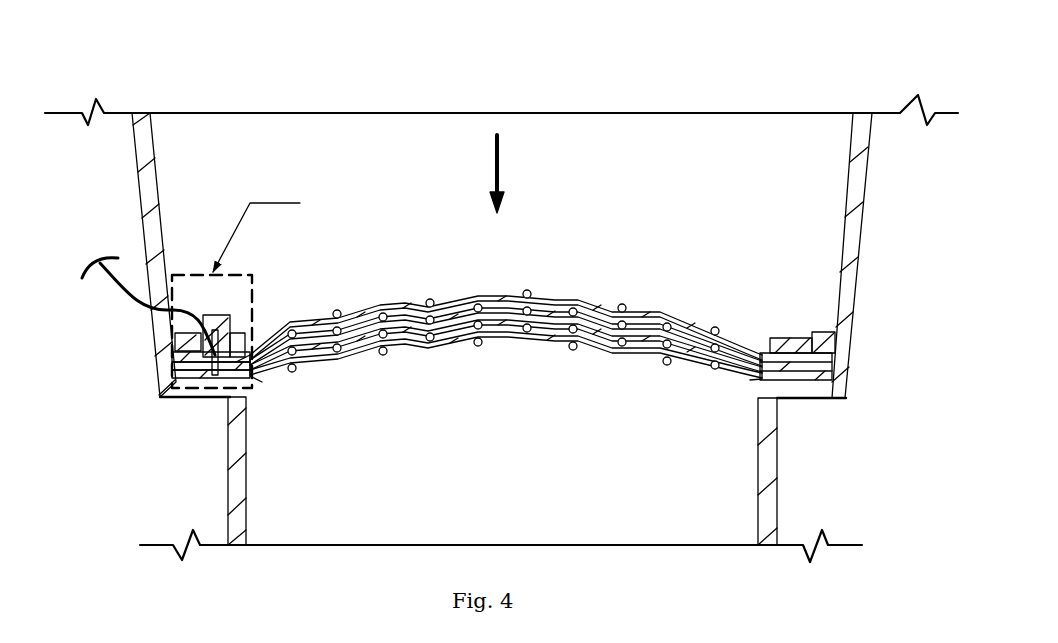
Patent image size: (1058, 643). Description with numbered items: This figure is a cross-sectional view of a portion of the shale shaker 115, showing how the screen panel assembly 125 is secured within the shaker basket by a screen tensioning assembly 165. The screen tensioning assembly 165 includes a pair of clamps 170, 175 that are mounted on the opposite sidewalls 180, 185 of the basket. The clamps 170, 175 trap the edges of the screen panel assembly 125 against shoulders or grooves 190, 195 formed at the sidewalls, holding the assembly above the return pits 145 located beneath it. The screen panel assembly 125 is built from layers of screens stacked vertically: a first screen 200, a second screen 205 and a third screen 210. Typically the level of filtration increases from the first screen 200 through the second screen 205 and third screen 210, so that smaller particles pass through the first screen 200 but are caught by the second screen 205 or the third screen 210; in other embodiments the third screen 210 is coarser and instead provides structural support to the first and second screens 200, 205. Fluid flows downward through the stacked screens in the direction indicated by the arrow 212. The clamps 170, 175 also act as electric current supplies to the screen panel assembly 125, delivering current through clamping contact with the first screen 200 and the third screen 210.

The shale shaker 115 is at (383, 78).
The screen panel assembly 125 is at (352, 300).
The return pits 145 is at (330, 515).
The screen tensioning assembly 165 is at (222, 202).
The clamp 170 is at (180, 327).
The clamp 175 is at (833, 340).
The sidewall 180 is at (148, 192).
The sidewall 185 is at (857, 175).
The shoulder or groove 190 is at (255, 375).
The shoulder or groove 195 is at (748, 378).
The first screen 200 is at (690, 325).
The second screen 205 is at (545, 325).
The third screen 210 is at (413, 342).
The arrow 212 is at (500, 163).